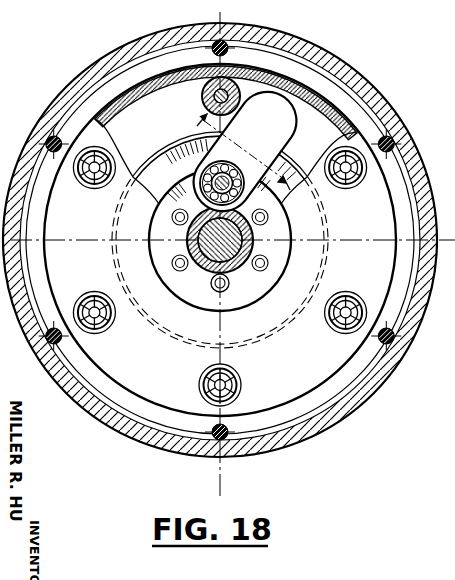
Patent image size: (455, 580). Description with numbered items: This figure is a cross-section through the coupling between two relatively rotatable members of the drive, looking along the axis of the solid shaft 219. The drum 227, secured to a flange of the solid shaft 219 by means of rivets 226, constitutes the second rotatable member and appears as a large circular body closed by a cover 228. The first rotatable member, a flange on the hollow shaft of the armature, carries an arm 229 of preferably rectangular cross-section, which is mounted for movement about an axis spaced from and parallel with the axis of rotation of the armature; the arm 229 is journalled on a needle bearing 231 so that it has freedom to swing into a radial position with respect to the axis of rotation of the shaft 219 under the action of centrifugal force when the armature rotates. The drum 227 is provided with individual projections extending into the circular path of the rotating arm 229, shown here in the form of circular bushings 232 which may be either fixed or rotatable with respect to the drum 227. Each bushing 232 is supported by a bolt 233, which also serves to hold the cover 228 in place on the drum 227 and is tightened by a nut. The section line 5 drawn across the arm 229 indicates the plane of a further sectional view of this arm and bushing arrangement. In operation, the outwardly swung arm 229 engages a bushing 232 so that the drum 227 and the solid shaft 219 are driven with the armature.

The section line 5- 5 is at (243, 160).
The solid shaft 219 is at (220, 240).
The rivets 226 is at (250, 298).
The drum 227 is at (283, 393).
The cover 228 is at (134, 158).
The arm 229 is at (258, 137).
The needle bearing 231 is at (200, 176).
The circular bushings 232 is at (202, 98).
The bolt 233 is at (344, 296).